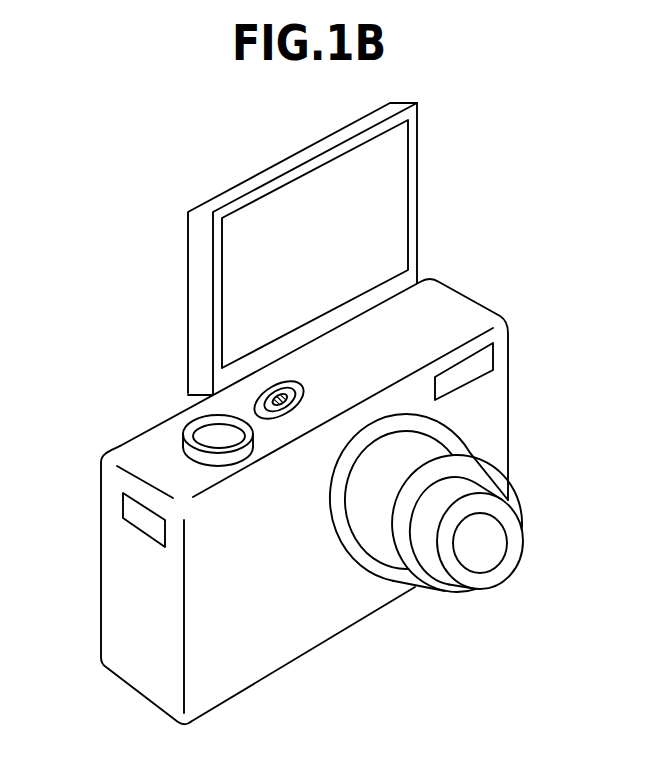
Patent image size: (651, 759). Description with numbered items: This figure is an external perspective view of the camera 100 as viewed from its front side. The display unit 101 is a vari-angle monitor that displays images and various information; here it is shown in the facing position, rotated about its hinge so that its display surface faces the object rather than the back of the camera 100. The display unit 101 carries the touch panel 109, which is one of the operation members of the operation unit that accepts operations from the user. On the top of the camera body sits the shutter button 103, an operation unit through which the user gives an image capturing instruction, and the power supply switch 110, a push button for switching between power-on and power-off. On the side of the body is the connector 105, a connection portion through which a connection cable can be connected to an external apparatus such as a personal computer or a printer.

The camera 100 is at (204, 173).
The display unit 101 is at (370, 249).
The touch panel 109 is at (392, 201).
The power supply switch 110 is at (282, 388).
The shutter button 103 is at (213, 433).
The connector 105 is at (128, 507).